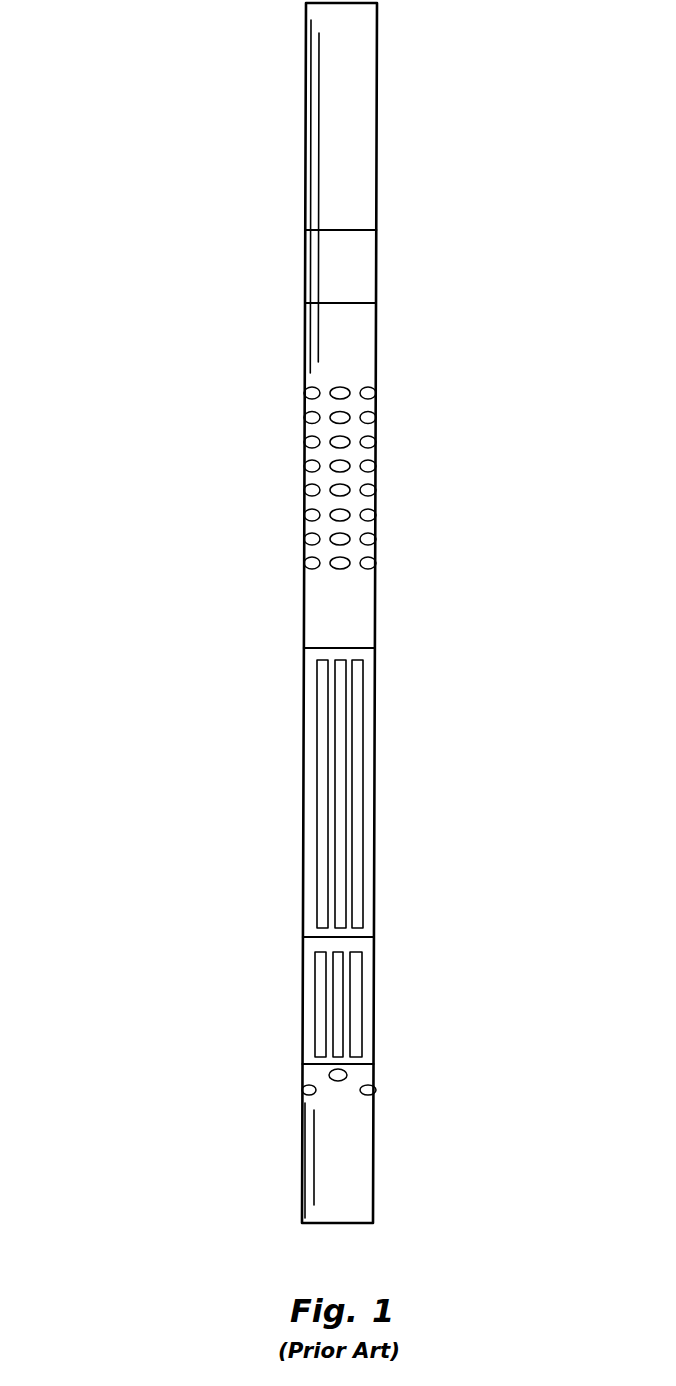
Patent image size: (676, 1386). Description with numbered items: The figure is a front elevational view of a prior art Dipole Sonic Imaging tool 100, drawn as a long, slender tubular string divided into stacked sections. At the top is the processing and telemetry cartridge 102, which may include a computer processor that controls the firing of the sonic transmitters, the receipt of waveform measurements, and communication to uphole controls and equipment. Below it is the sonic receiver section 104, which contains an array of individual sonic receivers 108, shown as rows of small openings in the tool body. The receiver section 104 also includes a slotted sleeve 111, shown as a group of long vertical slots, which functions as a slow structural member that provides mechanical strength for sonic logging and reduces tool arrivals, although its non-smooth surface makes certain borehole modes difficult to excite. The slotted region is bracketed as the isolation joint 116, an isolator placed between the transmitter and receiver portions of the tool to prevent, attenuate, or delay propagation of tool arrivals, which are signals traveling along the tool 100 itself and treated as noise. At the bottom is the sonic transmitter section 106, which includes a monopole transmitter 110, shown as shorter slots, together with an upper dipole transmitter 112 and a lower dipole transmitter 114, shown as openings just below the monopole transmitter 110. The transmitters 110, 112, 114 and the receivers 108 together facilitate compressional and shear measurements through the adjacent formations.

The Dipole Sonic Imaging tool 100 is at (160, 232).
The processing and telemetry cartridge 102 is at (376, 162).
The sonic receiver section 104 is at (377, 335).
The sonic receivers 108 is at (372, 418).
The isolation joint 116 is at (396, 650).
The slotted sleeve 111 is at (318, 830).
The monopole transmitter 110 is at (316, 998).
The sonic transmitter section 106 is at (395, 942).
The upper dipole transmitter 112 is at (329, 1075).
The lower dipole transmitter 114 is at (303, 1091).